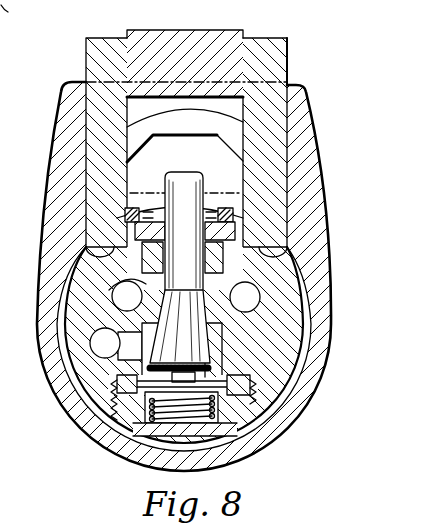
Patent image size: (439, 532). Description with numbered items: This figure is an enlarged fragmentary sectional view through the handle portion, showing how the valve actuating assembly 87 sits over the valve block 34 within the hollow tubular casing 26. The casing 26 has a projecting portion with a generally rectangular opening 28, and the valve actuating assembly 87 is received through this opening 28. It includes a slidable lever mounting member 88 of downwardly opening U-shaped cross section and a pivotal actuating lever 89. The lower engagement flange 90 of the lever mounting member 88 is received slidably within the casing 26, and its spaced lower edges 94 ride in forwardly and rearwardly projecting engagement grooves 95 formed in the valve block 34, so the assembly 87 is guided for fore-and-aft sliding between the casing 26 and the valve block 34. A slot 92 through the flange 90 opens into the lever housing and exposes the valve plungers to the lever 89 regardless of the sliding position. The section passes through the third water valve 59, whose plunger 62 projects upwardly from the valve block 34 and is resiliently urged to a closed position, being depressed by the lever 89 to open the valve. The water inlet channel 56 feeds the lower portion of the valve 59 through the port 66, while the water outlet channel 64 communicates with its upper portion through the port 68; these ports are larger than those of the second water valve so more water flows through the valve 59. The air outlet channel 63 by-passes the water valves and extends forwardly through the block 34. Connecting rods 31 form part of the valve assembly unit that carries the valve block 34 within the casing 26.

The hollow tubular casing 26 is at (262, 433).
The rectangular opening 28 is at (84, 95).
The connecting rods 31 is at (14, 15).
The valve block 34 is at (61, 330).
The water inlet channel 56 is at (93, 358).
The third water valve 59 is at (287, 354).
The plunger 62 is at (164, 181).
The air outlet channel 63 is at (250, 300).
The water outlet channel 64 is at (111, 298).
The port 66 is at (112, 383).
The port 68 is at (116, 287).
The valve actuating assembly 87 is at (288, 53).
The lever mounting member 88 is at (256, 50).
The actuating lever 89 is at (166, 45).
The engagement flange 90 is at (270, 182).
The slot 92 is at (224, 123).
The lower edges 94 is at (100, 240).
The engagement grooves 95 is at (100, 250).